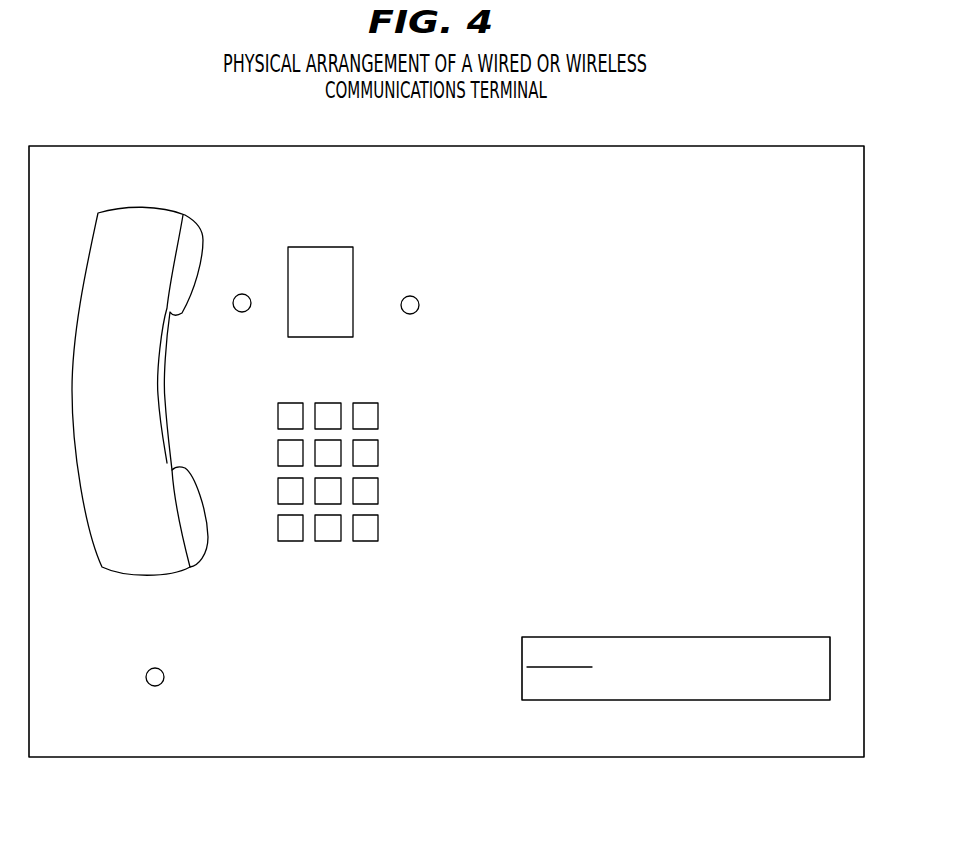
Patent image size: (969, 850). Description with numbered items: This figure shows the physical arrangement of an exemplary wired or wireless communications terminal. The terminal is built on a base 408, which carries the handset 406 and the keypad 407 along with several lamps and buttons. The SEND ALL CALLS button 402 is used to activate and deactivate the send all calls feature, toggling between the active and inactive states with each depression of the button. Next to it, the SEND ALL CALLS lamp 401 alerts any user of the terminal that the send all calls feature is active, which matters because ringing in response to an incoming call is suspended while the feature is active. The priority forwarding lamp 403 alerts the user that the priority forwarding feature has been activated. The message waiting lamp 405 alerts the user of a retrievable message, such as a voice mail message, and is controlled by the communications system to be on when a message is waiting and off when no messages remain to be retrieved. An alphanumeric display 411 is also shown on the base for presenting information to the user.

The SEND ALL CALLS lamp 401 is at (245, 337).
The SEND ALL CALLS button 402 is at (308, 247).
The priority forwarding lamp 403 is at (430, 337).
The message waiting lamp 405 is at (183, 685).
The handset 406 is at (147, 567).
The keypad 407 is at (383, 563).
The base 408 is at (688, 146).
The alphanumeric display 411 is at (522, 688).